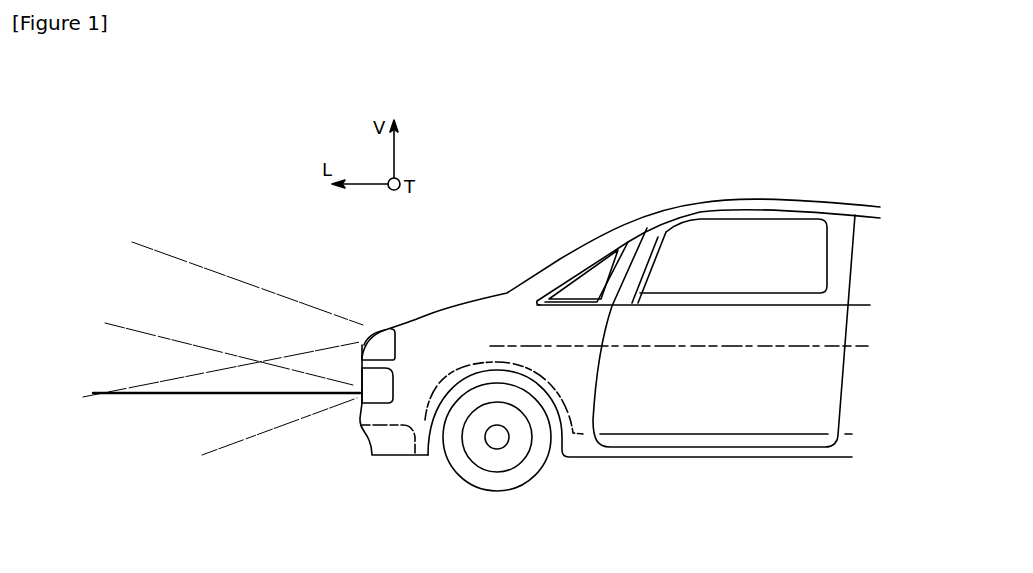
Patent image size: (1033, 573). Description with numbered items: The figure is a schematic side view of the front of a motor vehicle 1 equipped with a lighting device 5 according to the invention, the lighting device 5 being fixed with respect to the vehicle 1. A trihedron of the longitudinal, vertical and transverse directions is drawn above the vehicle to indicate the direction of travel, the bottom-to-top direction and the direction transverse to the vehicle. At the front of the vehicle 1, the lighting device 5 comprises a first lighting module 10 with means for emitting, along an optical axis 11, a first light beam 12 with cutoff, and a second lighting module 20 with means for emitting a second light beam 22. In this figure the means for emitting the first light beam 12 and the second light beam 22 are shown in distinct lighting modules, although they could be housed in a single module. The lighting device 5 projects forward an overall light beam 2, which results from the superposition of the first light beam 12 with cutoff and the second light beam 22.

The motor vehicle 1 is at (703, 158).
The overall light beam 2 is at (137, 349).
The lighting device 5 is at (405, 385).
The first lighting module 10 is at (367, 394).
The optical axis 11 is at (173, 396).
The first light beam 12 is at (246, 427).
The second lighting module 20 is at (388, 344).
The second light beam 22 is at (265, 308).